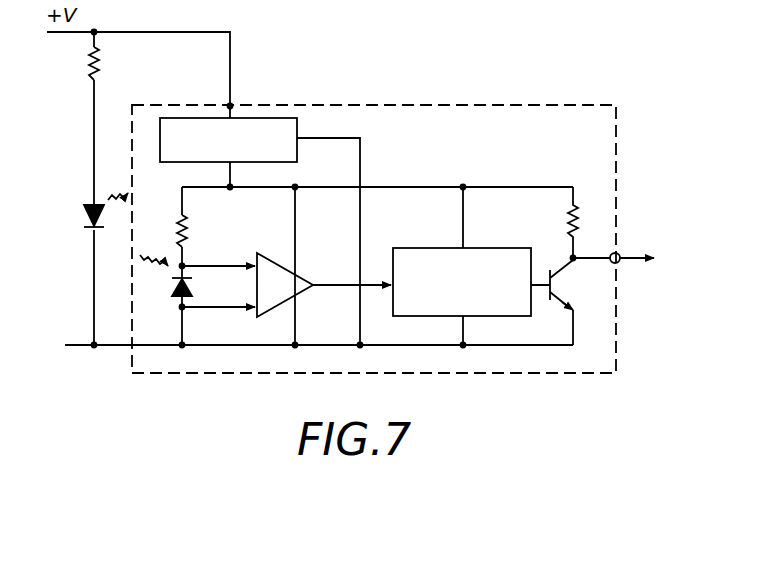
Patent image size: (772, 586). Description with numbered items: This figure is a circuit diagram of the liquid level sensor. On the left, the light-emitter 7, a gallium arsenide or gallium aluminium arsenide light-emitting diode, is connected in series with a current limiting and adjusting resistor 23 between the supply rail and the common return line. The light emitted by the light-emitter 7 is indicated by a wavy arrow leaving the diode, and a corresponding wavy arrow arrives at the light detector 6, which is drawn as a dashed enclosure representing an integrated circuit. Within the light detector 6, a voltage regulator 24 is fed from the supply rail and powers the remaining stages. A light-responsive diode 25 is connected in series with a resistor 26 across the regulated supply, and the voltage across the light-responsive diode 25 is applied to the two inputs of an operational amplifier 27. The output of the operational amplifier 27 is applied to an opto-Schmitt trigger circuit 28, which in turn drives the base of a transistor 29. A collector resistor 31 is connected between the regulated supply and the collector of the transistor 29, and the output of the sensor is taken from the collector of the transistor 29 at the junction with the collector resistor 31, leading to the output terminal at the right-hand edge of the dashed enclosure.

The light detector 6 is at (170, 336).
The light-emitter 7 is at (86, 217).
The current limiting and adjusting resistor 23 is at (102, 60).
The voltage regulator 24 is at (292, 152).
The light-responsive diode 25 is at (190, 287).
The resistor 26 is at (186, 232).
The operational amplifier 27 is at (271, 255).
The opto-Schmitt trigger circuit 28 is at (419, 248).
The transistor 29 is at (548, 255).
The collector resistor 31 is at (580, 214).